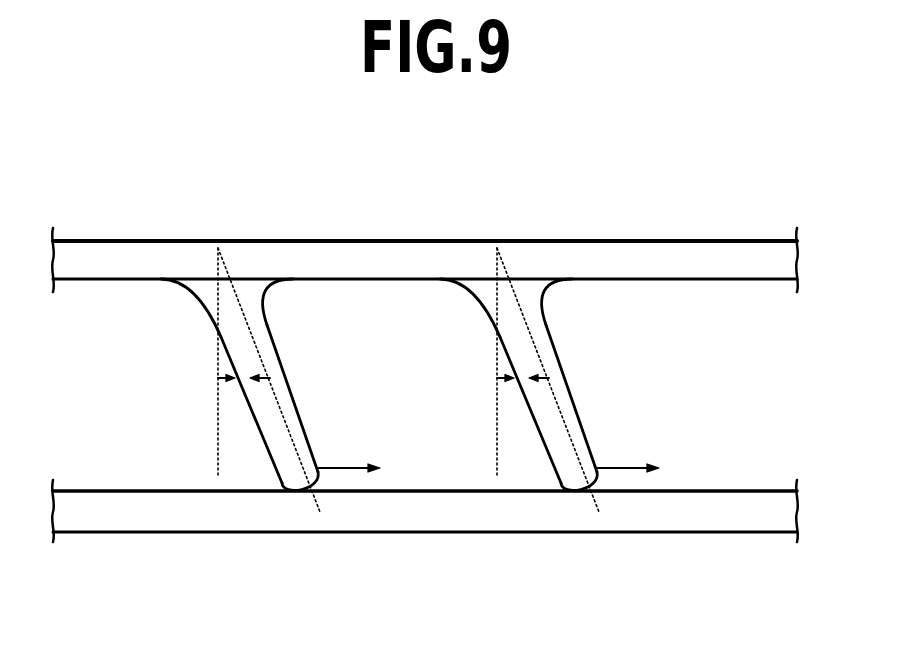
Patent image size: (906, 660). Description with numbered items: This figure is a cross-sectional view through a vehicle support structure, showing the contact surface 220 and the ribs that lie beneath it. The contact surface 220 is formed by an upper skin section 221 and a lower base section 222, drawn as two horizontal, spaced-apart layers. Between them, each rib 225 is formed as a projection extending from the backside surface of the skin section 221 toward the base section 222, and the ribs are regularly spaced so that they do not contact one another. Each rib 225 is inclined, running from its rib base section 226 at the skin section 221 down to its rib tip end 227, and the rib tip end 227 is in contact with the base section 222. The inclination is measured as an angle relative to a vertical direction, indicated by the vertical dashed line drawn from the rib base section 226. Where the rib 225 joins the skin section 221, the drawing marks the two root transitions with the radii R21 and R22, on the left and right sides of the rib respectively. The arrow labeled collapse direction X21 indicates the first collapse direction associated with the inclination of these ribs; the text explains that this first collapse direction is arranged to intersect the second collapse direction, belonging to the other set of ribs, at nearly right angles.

The contact surface 220 is at (425, 369).
The skin section 221 is at (643, 239).
The base section 222 is at (700, 534).
The rib 225 is at (268, 447).
The rib base section 226 is at (200, 300).
The rib tip end 227 is at (282, 488).
The root fillet radius R21 is at (199, 304).
The root fillet radius R22 is at (276, 295).
The collapse direction X21 is at (488, 452).